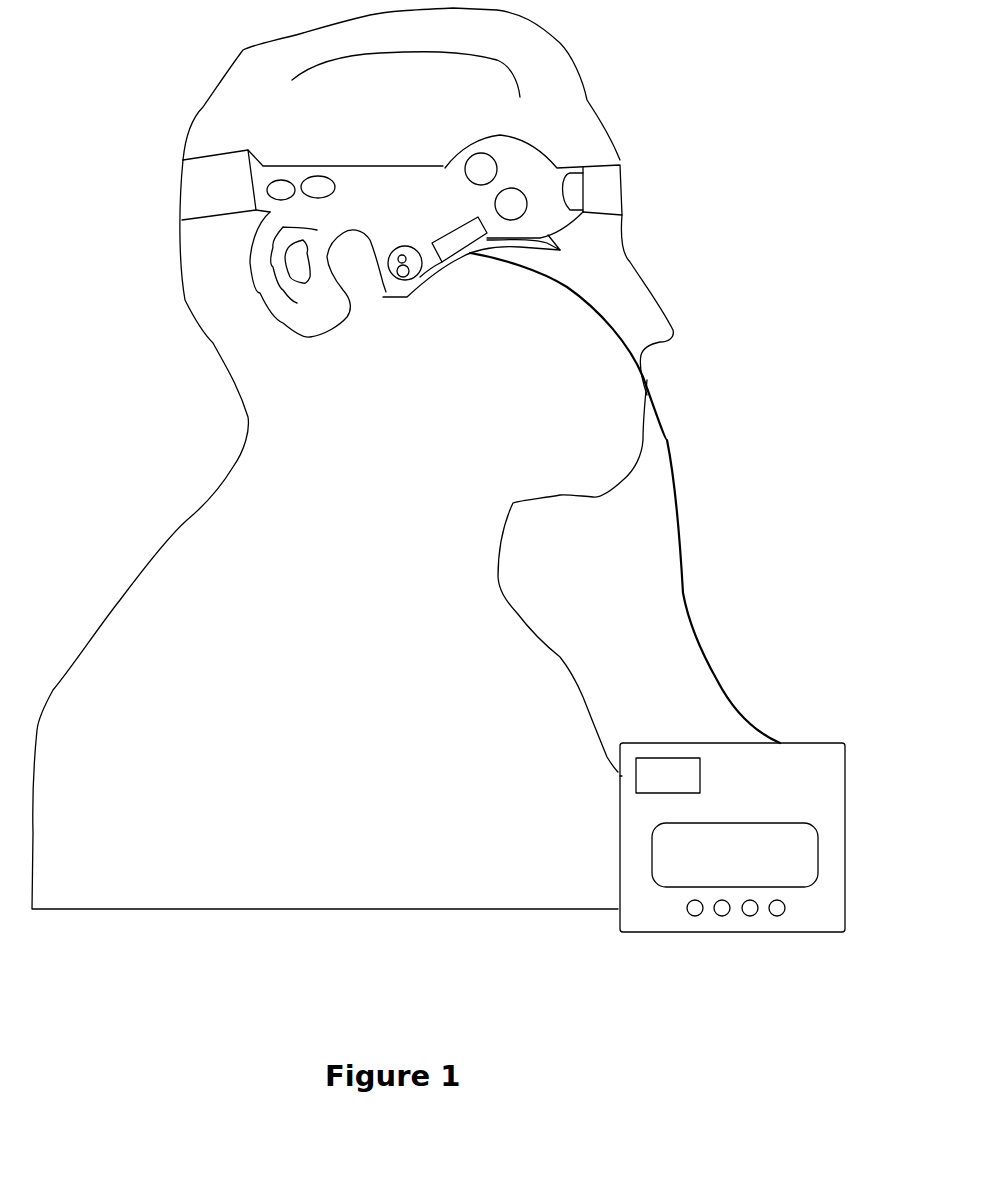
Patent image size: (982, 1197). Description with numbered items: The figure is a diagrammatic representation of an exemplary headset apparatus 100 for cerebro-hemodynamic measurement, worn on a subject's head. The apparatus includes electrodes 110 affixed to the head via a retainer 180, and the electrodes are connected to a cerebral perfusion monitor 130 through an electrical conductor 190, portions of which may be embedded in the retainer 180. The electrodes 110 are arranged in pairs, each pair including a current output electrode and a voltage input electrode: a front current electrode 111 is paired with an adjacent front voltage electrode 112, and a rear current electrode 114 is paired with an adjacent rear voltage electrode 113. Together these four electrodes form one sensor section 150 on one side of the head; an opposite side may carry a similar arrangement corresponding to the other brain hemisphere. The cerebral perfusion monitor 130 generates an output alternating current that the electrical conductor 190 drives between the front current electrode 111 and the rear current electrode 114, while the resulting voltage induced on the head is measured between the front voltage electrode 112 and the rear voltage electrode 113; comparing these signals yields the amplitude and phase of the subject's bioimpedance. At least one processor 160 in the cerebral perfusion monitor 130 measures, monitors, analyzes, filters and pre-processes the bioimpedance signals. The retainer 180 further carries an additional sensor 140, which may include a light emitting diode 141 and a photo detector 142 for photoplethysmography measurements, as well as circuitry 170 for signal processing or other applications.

The headset apparatus 100 is at (774, 78).
The electrodes 110 is at (493, 206).
The front current electrode 111 is at (525, 185).
The front voltage electrode 112 is at (481, 153).
The rear voltage electrode 113 is at (322, 176).
The rear current electrode 114 is at (281, 180).
The cerebral perfusion monitor 130 is at (800, 740).
The additional sensor 140 is at (423, 280).
The light emitting diode 141 is at (393, 275).
The photo detector 142 is at (408, 282).
The sensor section 150 is at (397, 50).
The processor 160 is at (618, 776).
The circuitry 170 is at (547, 243).
The retainer 180 is at (537, 148).
The electrical conductor 190 is at (683, 535).